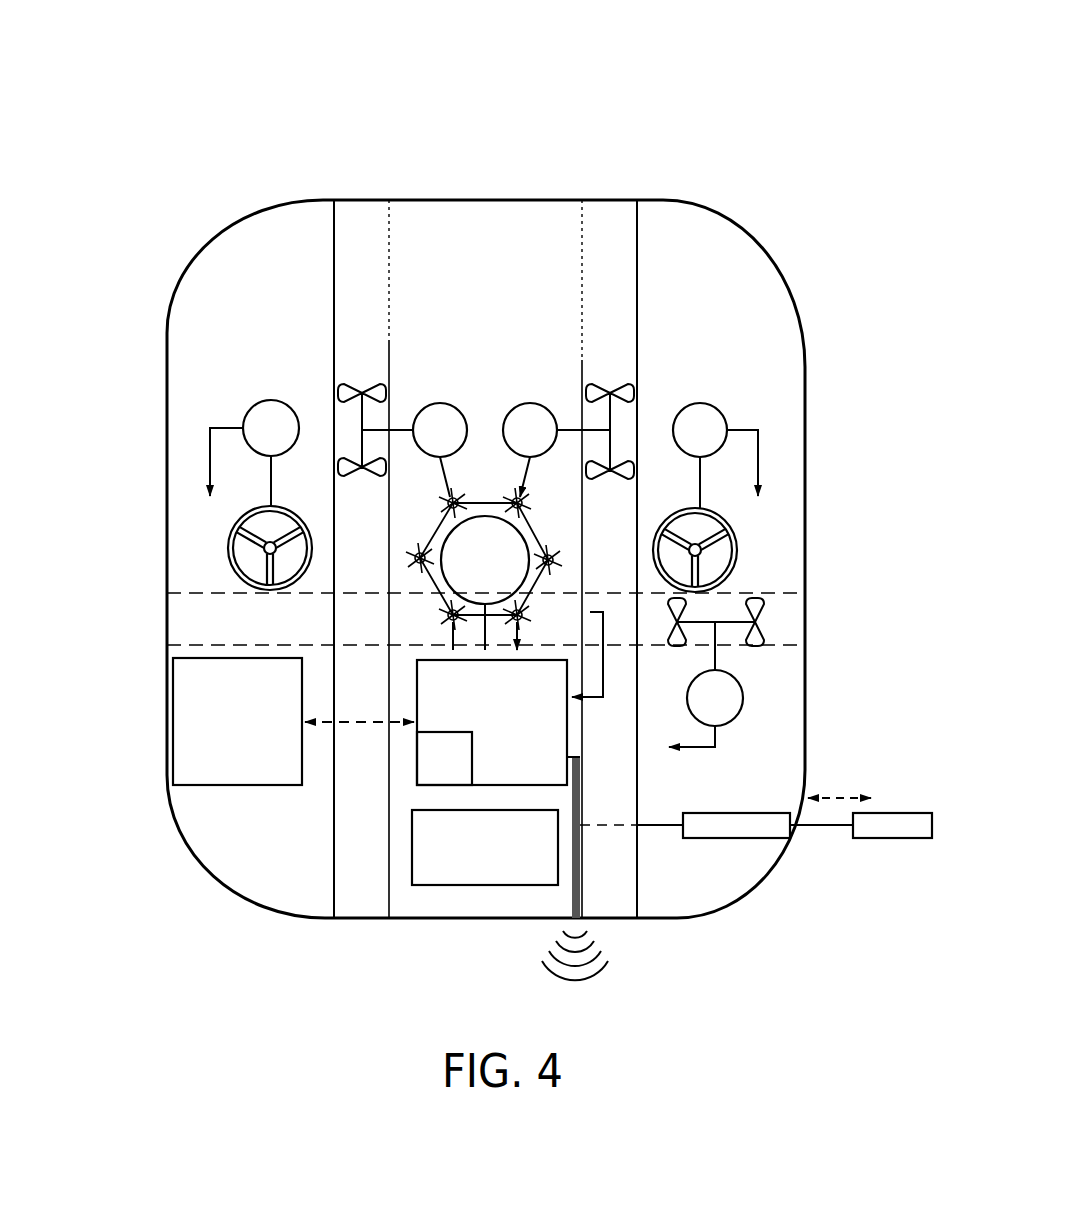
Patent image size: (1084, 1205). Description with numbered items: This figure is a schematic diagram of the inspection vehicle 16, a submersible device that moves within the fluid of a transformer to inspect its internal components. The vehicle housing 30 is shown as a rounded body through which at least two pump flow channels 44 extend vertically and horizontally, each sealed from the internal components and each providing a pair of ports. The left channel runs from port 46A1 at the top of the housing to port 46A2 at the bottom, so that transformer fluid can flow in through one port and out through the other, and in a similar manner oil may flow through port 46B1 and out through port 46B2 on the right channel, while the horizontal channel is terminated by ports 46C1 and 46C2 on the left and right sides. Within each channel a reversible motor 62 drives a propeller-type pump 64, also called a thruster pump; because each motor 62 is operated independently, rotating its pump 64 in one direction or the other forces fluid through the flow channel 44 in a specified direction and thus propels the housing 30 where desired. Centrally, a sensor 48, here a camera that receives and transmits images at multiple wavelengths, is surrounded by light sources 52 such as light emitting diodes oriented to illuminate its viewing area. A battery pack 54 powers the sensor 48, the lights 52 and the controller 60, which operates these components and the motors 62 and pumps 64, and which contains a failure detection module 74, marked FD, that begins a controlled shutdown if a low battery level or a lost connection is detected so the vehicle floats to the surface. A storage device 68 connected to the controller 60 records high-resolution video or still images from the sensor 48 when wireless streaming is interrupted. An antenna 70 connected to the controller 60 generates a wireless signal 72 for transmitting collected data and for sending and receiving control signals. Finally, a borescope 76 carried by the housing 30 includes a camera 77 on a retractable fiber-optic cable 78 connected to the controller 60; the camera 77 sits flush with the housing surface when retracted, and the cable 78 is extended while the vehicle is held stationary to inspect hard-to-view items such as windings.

The inspection vehicle 16 is at (665, 103).
The vehicle housing 30 is at (766, 246).
The pump flow channel 44 is at (348, 199).
The port 46A1 is at (383, 235).
The port 46A2 is at (340, 917).
The port 46B1 is at (637, 230).
The port 46B2 is at (633, 909).
The port 46C1 is at (230, 548).
The port 46C2 is at (737, 572).
The sensor 48 is at (485, 515).
The light source 52 is at (549, 548).
The battery pack 54 is at (443, 885).
The controller 60 is at (567, 745).
The motor 62 is at (272, 400).
The pump 64 is at (348, 386).
The storage device 68 is at (237, 785).
The antenna 70 is at (567, 920).
The wireless signal 72 is at (570, 970).
The failure detection module 74 is at (417, 775).
The borescope 76 is at (819, 776).
The camera 77 is at (883, 838).
The retractable fiber-optic cable 78 is at (805, 840).